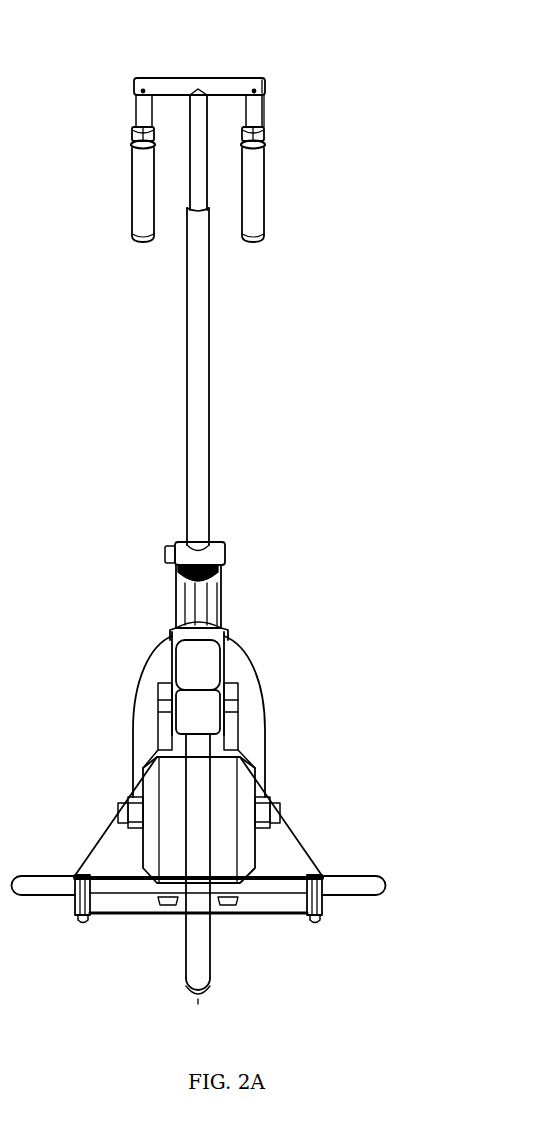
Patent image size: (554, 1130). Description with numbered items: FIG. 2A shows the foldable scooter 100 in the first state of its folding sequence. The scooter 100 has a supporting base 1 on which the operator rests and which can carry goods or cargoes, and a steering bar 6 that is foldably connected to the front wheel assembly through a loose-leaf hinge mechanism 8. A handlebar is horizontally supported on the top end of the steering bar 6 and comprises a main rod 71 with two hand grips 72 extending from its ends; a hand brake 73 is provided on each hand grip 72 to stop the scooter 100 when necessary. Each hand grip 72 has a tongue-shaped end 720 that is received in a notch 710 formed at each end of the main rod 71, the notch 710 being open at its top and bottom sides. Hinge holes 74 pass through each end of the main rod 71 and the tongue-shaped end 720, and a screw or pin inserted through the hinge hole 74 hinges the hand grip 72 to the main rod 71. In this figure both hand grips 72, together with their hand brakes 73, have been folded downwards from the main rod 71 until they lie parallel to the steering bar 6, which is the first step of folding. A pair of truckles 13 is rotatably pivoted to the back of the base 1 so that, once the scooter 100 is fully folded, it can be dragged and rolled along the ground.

The foldable scooter 100 is at (489, 272).
The supporting base 1 is at (345, 885).
The truckles 13 is at (85, 922).
The steering bar 6 is at (208, 433).
The hinge mechanism 8 is at (218, 548).
The main rod 71 is at (188, 82).
The notch 710 is at (265, 79).
The tongue-shaped end 720 is at (287, 101).
The hand grip 72 is at (137, 170).
The hand brake 73 is at (133, 128).
The hinge hole 74 is at (143, 89).